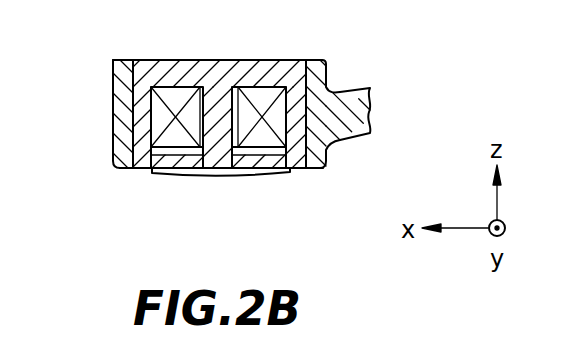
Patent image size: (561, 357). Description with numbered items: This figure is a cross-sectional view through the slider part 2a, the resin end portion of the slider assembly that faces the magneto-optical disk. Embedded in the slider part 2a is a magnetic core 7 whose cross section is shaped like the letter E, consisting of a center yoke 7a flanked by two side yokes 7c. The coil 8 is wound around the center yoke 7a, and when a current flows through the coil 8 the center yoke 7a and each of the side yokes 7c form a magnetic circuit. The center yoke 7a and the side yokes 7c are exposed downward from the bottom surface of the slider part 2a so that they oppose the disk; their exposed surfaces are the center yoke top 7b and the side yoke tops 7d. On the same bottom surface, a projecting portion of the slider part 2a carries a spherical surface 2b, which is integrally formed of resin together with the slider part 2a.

The slider part 2a is at (112, 66).
The spherical surface 2b is at (253, 177).
The magnetic core 7 is at (242, 60).
The center yoke 7a is at (250, 87).
The center yoke top 7b is at (213, 173).
The side yoke 7c is at (118, 103).
The side yoke top 7d is at (142, 167).
The coil 8 is at (178, 87).